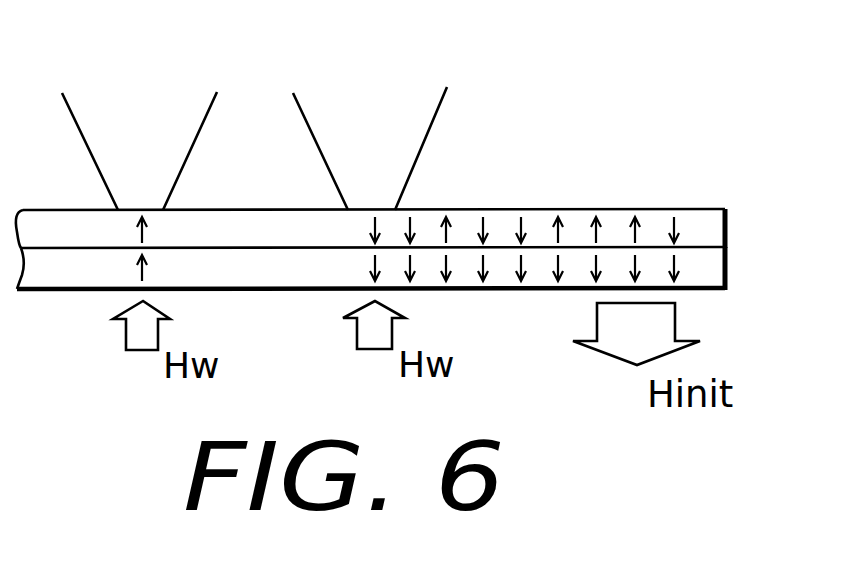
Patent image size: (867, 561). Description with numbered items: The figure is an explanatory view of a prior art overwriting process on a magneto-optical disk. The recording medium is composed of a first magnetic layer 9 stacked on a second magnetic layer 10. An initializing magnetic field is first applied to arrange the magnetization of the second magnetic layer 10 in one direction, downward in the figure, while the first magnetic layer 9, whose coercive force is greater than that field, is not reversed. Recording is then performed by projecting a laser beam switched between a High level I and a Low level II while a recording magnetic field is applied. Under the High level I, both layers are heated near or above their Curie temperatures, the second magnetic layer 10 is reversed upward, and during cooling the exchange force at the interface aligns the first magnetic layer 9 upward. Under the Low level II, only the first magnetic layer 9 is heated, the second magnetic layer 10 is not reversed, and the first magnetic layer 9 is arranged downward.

The first magnetic layer 9 is at (707, 233).
The second magnetic layer 10 is at (707, 270).
The High level I is at (139, 123).
The Low level II is at (370, 123).